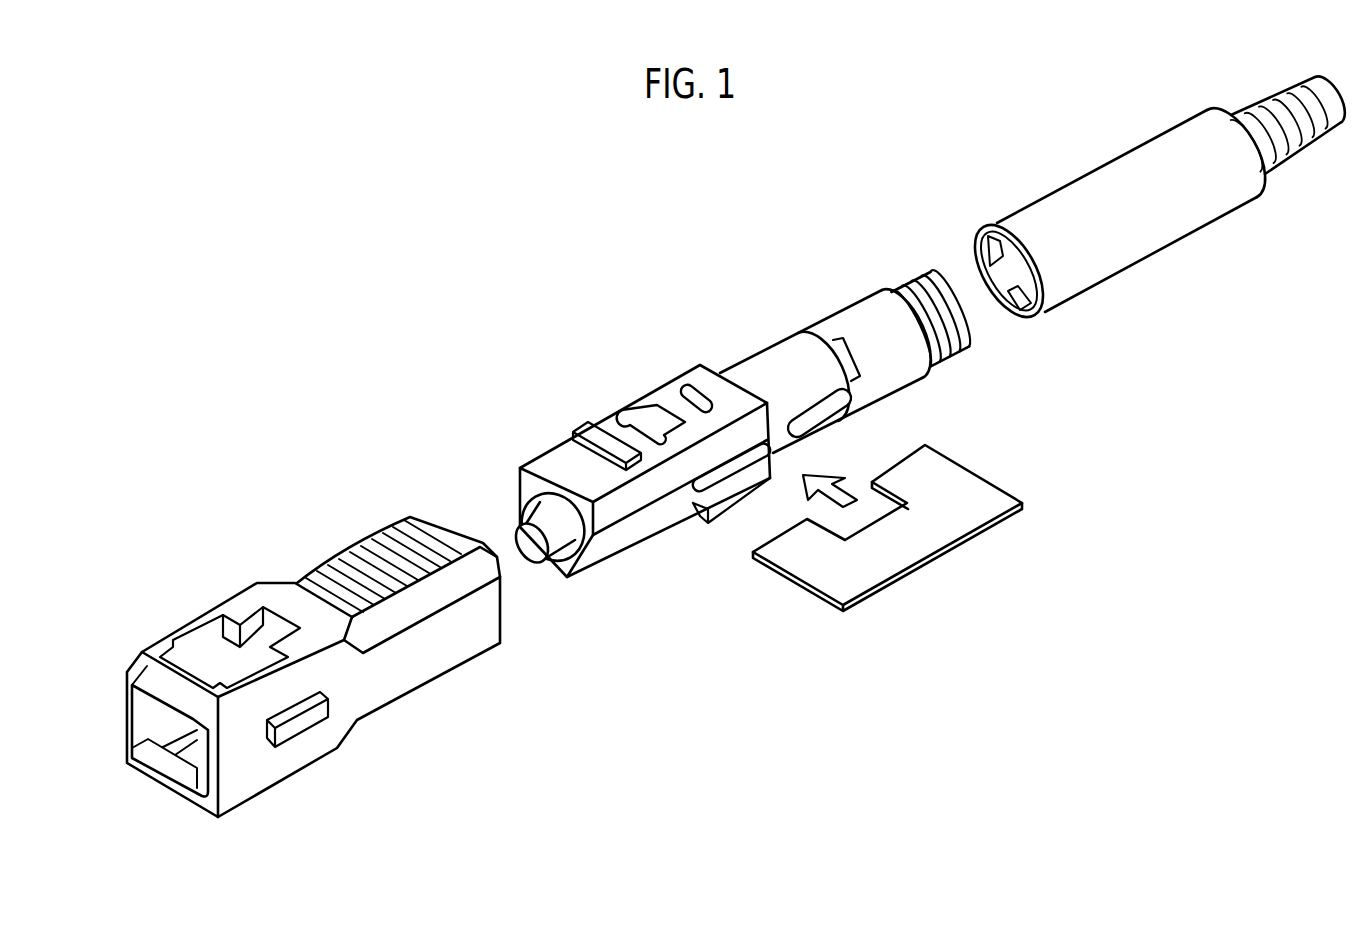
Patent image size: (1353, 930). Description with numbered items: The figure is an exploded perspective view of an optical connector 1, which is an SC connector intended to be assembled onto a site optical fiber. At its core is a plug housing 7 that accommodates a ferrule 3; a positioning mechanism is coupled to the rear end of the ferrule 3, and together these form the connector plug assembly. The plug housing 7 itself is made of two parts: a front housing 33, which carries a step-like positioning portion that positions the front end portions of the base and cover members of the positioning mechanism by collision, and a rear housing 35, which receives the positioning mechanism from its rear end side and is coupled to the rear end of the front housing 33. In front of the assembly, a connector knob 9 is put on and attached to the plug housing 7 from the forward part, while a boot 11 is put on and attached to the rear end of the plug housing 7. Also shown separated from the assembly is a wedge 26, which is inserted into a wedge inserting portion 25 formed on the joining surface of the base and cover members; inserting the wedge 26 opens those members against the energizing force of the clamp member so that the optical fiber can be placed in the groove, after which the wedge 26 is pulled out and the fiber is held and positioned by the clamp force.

The optical connector 1 is at (732, 352).
The ferrule 3 is at (558, 530).
The plug housing 7 is at (647, 540).
The connector knob 9 is at (399, 707).
The boot 11 is at (1121, 248).
The wedge inserting portion 25 is at (823, 412).
The wedge 26 is at (940, 522).
The front housing 33 is at (671, 380).
The rear housing 35 is at (787, 362).